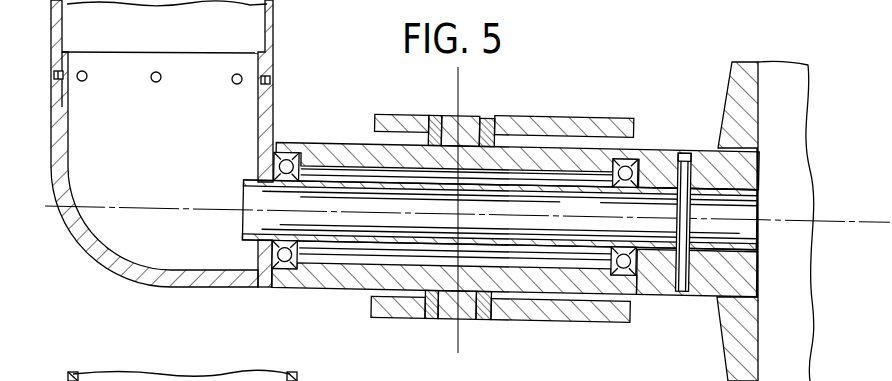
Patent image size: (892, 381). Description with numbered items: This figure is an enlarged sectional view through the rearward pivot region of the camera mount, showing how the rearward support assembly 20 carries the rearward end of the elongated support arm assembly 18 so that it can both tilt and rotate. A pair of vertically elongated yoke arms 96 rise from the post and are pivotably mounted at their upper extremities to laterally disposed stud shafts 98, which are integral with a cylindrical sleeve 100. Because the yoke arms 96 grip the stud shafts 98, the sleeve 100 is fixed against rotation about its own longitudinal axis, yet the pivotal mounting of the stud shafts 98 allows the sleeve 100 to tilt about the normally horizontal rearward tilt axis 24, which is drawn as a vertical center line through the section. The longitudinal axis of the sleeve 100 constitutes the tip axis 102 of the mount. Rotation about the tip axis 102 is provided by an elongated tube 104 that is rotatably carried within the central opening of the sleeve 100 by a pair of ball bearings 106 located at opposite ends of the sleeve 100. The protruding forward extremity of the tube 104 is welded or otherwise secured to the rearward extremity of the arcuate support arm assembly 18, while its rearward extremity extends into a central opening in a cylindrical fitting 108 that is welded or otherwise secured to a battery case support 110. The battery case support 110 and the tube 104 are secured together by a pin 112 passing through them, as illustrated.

The support arm assembly 18 is at (283, 22).
The rearward support assembly 20 is at (400, 322).
The rearward tilt axis 24 is at (458, 77).
The yoke arms 96 is at (560, 122).
The stud shafts 98 is at (465, 118).
The cylindrical sleeve 100 is at (333, 146).
The tip axis 102 is at (146, 212).
The elongated sleeve (tube) 104 is at (244, 182).
The ball bearings 106 is at (276, 141).
The cylindrical fitting 108 is at (662, 281).
The battery case support 110 is at (733, 371).
The pin 112 is at (682, 152).